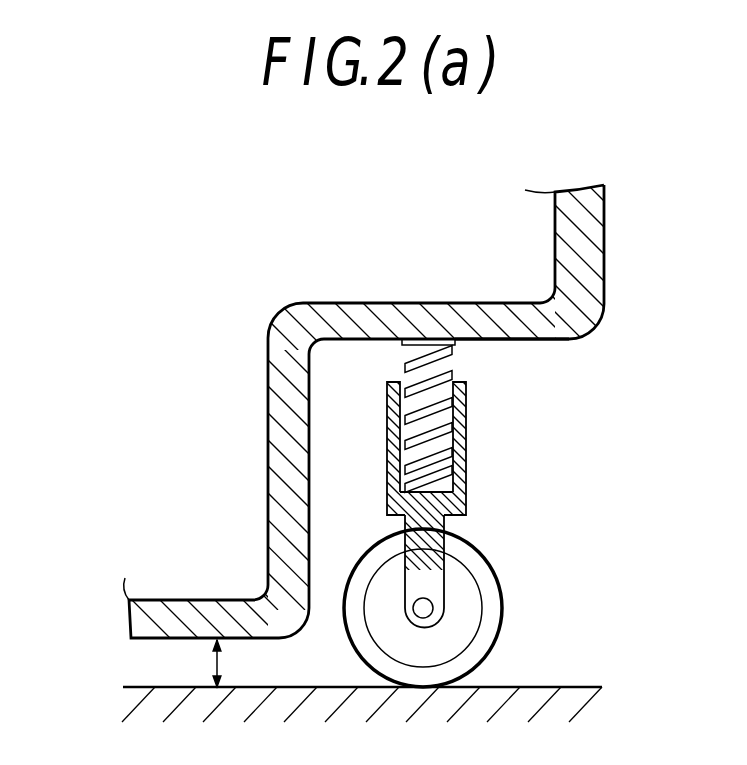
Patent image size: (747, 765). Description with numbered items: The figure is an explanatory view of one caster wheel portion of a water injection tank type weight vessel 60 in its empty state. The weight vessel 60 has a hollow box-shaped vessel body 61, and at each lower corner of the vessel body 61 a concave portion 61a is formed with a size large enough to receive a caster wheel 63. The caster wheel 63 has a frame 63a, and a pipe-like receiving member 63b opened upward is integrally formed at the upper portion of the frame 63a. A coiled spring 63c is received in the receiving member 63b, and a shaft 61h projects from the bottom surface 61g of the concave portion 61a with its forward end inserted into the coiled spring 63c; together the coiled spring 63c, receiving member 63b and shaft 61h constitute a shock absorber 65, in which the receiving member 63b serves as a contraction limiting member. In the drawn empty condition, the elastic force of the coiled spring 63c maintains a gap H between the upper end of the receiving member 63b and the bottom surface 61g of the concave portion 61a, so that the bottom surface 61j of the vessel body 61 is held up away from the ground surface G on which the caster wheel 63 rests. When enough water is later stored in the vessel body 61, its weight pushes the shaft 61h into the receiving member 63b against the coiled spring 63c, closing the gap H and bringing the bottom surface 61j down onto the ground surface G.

The weight vessel 60 is at (614, 251).
The vessel body 61 is at (599, 290).
The concave portion 61a is at (312, 456).
The bottom surface of the concave portion 61g is at (562, 339).
The shaft 61h is at (460, 411).
The bottom surface of the vessel body 61j is at (180, 642).
The caster wheel 63 is at (495, 615).
The frame 63a is at (447, 553).
The receiving member 63b is at (463, 453).
The coiled spring 63c is at (452, 346).
The shock absorber 65 is at (480, 498).
The ground surface G is at (577, 687).
The gap H is at (231, 663).